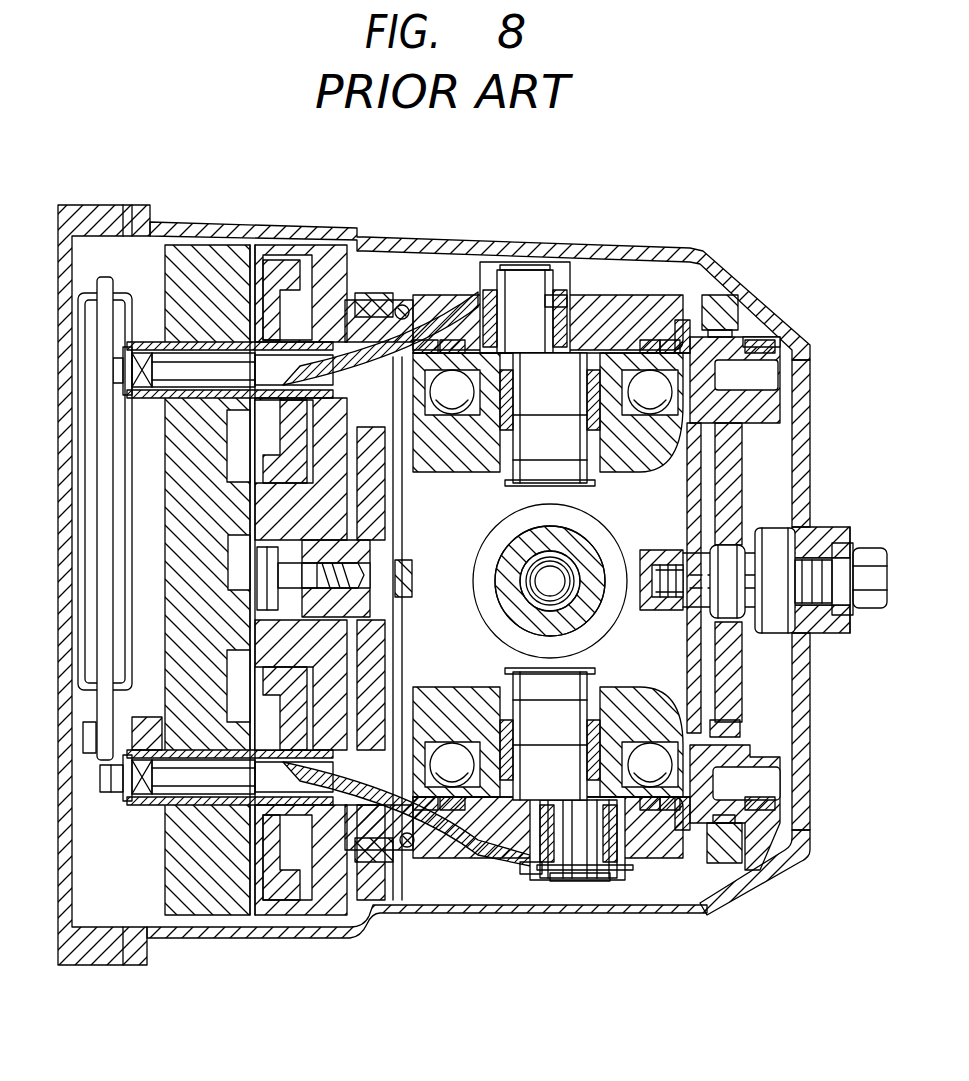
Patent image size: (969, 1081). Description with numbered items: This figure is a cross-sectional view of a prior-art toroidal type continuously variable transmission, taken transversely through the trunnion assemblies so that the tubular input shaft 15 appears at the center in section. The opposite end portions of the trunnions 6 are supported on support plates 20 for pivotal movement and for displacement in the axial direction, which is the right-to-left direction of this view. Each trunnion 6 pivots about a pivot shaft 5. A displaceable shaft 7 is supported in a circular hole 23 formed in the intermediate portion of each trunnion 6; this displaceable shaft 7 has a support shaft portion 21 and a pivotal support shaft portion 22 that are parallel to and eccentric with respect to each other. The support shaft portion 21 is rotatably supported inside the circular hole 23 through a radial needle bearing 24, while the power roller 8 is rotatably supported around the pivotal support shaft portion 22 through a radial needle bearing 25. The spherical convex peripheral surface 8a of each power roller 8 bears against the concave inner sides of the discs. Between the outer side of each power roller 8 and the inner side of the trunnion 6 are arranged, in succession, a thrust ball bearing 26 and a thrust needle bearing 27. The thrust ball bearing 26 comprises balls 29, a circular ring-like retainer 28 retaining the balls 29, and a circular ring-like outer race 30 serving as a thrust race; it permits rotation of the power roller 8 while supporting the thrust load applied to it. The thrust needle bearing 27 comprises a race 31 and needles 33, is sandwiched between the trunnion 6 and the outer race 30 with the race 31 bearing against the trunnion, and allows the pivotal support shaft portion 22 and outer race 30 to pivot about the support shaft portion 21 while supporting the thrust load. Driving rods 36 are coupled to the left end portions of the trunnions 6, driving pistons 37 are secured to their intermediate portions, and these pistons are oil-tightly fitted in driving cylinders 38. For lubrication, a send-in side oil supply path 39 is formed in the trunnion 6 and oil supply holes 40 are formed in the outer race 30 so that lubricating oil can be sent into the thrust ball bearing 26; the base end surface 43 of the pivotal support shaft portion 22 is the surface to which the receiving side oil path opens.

The pivot shaft 5 is at (360, 232).
The trunnion 6 is at (712, 300).
The displaceable shaft 7 is at (570, 293).
The power roller 8 is at (713, 440).
The peripheral surface 8a is at (703, 453).
The input shaft 15 is at (513, 555).
The support plate 20 is at (412, 613).
The support shaft portion 21 is at (523, 290).
The pivotal support shaft portion 22 is at (583, 390).
The circular hole 23 is at (503, 300).
The radial needle bearing 24 is at (552, 303).
The radial needle bearing 25 is at (487, 437).
The thrust ball bearing 26 is at (650, 397).
The thrust needle bearing 27 is at (603, 337).
The retainer 28 is at (393, 300).
The ball 29 is at (447, 300).
The outer race 30 is at (688, 287).
The race 31 is at (637, 357).
The needle 33 is at (430, 290).
The driving rod 36 is at (193, 365).
The driving piston 37 is at (293, 370).
The driving cylinder 38 is at (257, 300).
The send-in side oil supply path 39 is at (385, 300).
The oil supply hole 40 is at (453, 423).
The base end surface 43 is at (556, 303).